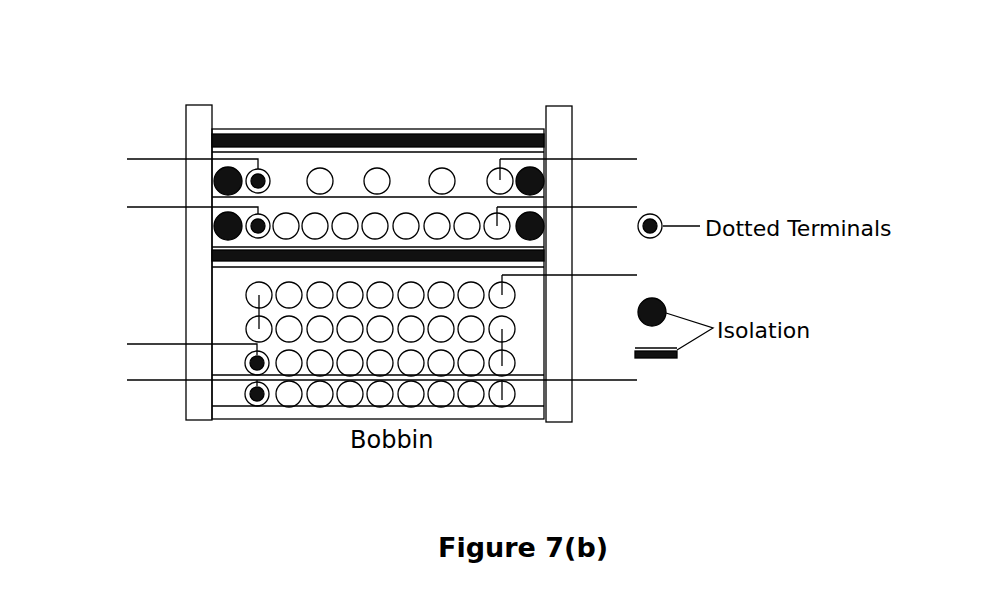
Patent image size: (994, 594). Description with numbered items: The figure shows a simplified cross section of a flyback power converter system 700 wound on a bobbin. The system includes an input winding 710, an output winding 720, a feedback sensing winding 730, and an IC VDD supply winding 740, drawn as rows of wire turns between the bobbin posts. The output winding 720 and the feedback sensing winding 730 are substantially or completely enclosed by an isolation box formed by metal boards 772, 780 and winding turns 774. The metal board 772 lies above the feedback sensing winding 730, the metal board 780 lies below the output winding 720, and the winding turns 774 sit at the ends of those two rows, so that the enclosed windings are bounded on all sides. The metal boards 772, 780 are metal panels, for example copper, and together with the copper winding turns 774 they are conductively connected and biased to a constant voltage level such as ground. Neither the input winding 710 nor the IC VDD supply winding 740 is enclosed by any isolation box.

The flyback power converter system 700 is at (60, 69).
The input winding 710 is at (133, 343).
The output winding 720 is at (136, 212).
The feedback sensing winding 730 is at (138, 154).
The IC VDD supply winding 740 is at (135, 380).
The metal board 772 is at (403, 133).
The winding turns 774 is at (213, 217).
The metal board 780 is at (545, 259).